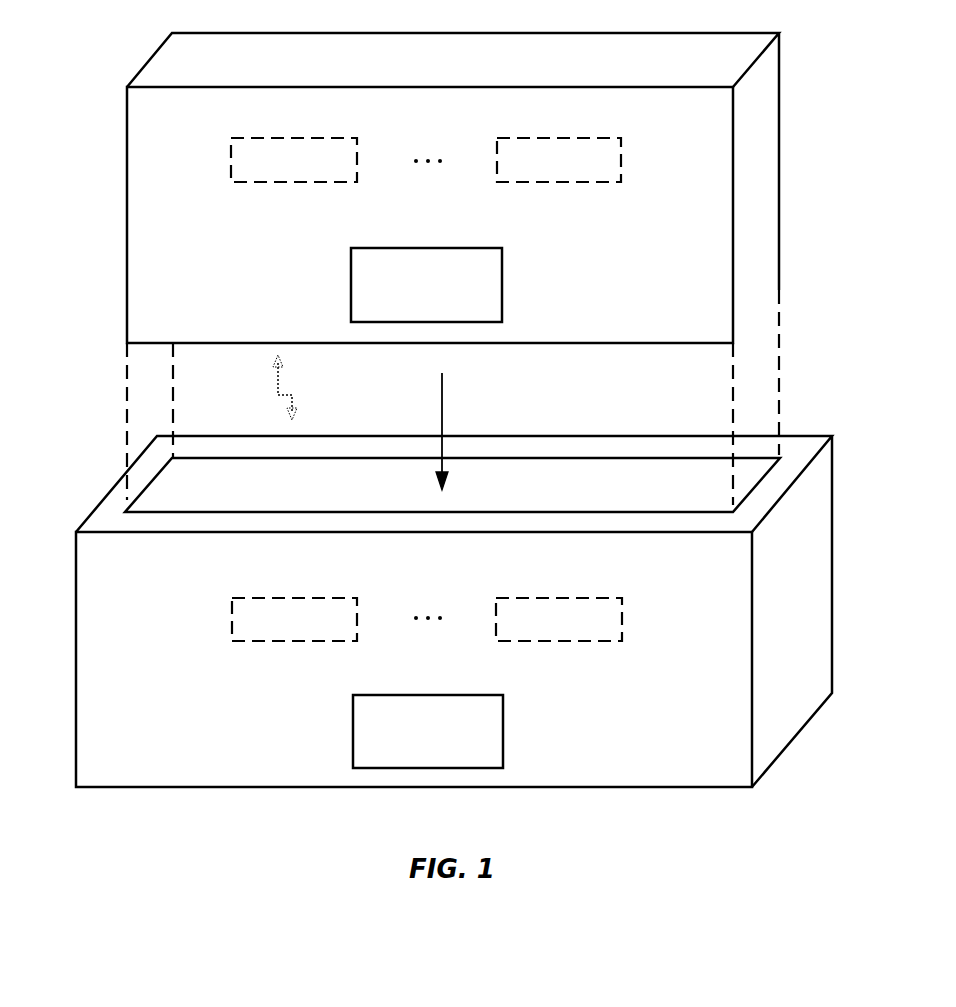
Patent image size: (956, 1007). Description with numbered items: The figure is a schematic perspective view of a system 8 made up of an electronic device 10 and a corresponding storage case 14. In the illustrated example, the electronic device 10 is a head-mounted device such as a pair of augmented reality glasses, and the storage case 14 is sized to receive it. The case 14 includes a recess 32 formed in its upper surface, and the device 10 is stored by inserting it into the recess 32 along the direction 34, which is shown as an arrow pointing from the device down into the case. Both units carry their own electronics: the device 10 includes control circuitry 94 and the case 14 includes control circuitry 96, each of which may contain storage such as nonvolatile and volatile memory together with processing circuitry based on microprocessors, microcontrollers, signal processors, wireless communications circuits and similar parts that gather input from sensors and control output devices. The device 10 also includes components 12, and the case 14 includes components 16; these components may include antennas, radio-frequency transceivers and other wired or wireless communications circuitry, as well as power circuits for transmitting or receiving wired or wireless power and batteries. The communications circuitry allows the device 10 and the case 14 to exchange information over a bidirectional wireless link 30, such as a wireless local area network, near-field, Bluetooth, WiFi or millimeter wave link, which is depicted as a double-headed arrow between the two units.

The system 8 is at (50, 28).
The electronic device 10 is at (722, 192).
The components 12 is at (297, 178).
The control circuitry 94 is at (497, 283).
The wireless link 30 is at (292, 400).
The direction 34 is at (442, 403).
The recess 32 is at (622, 470).
The storage case 14 is at (832, 593).
The components 16 is at (298, 637).
The control circuitry 96 is at (498, 728).